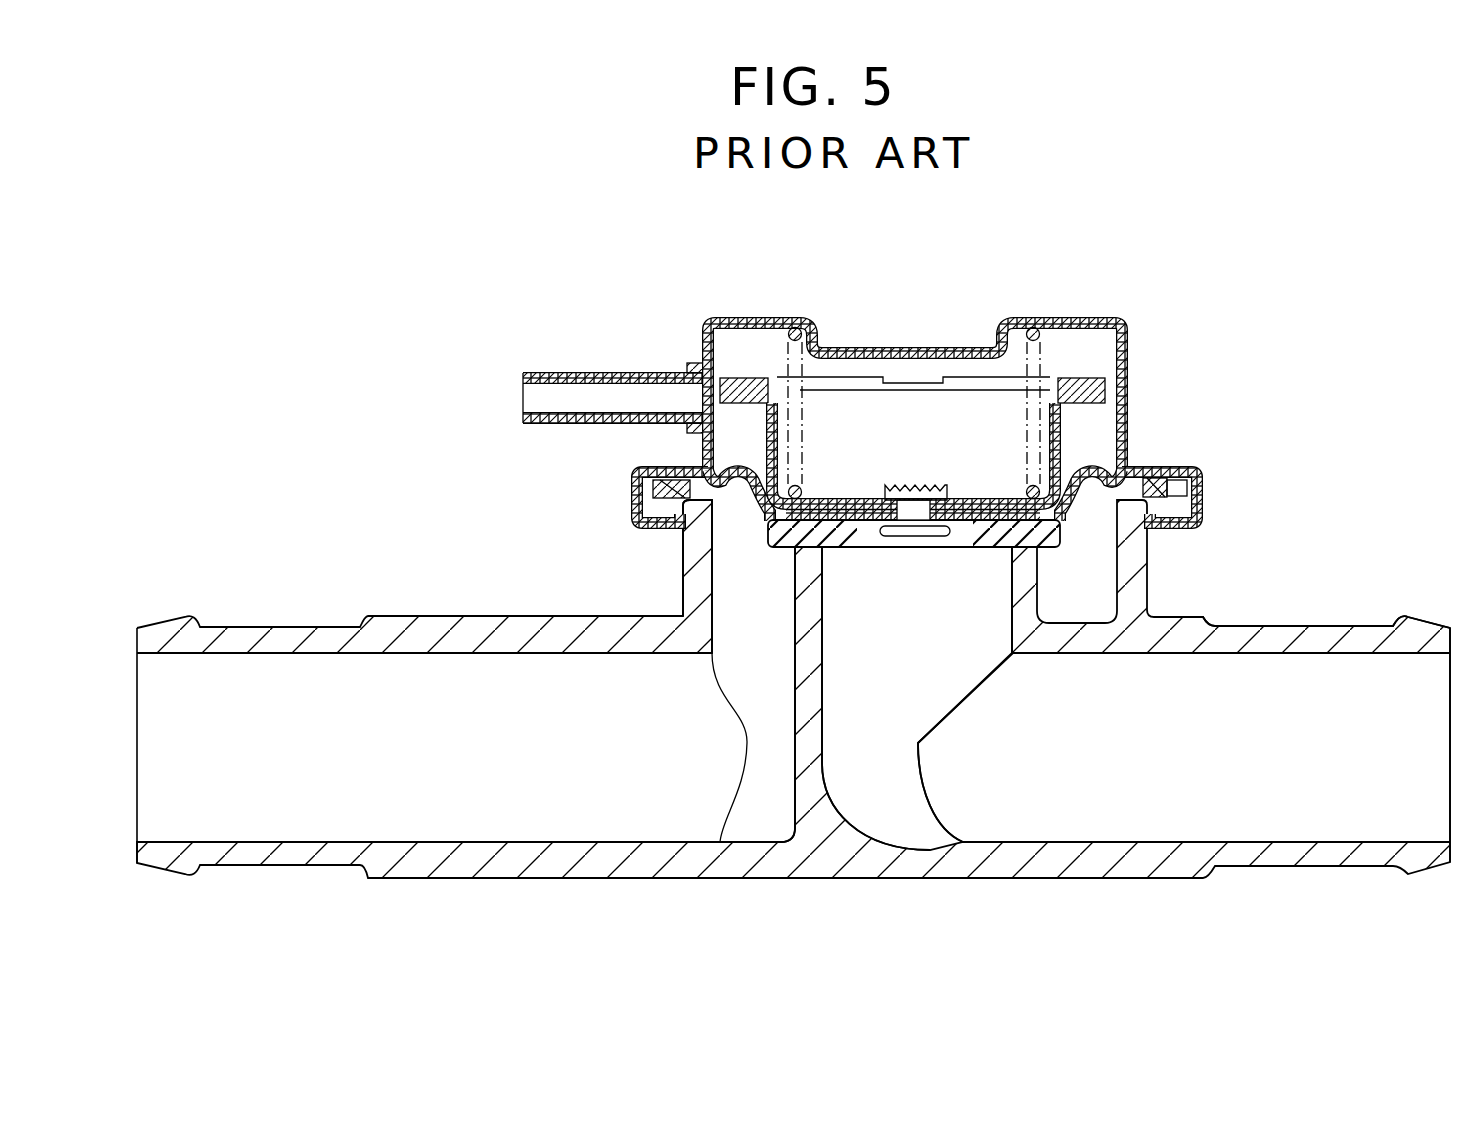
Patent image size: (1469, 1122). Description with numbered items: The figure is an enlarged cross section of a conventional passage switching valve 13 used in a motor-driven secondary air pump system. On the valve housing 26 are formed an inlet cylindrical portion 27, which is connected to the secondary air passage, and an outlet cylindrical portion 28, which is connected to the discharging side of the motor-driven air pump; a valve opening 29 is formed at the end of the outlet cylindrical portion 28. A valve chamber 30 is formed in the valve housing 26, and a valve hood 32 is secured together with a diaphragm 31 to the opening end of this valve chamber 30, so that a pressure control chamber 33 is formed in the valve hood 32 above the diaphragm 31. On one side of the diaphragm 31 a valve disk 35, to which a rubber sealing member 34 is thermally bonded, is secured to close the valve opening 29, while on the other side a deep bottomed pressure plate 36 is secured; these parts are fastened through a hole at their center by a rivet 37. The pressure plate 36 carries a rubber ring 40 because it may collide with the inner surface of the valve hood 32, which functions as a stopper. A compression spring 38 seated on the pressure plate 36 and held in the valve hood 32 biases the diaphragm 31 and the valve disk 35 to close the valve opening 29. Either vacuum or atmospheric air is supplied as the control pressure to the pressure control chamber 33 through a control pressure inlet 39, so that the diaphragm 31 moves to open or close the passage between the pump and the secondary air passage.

The passage switching valve 13 is at (933, 407).
The valve housing 26 is at (1133, 585).
The inlet cylindrical portion 27 is at (396, 626).
The outlet cylindrical portion 28 is at (1332, 627).
The valve opening 29 is at (805, 583).
The valve chamber 30 is at (720, 536).
The diaphragm 31 is at (1108, 448).
The valve hood 32 is at (1080, 338).
The pressure control chamber 33 is at (758, 332).
The rubber sealing member 34 is at (985, 546).
The valve disk 35 is at (1058, 531).
The pressure plate 36 is at (775, 428).
The rivet 37 is at (918, 484).
The compression spring 38 is at (1030, 332).
The control pressure inlet 39 is at (576, 374).
The rubber ring 40 is at (1090, 374).